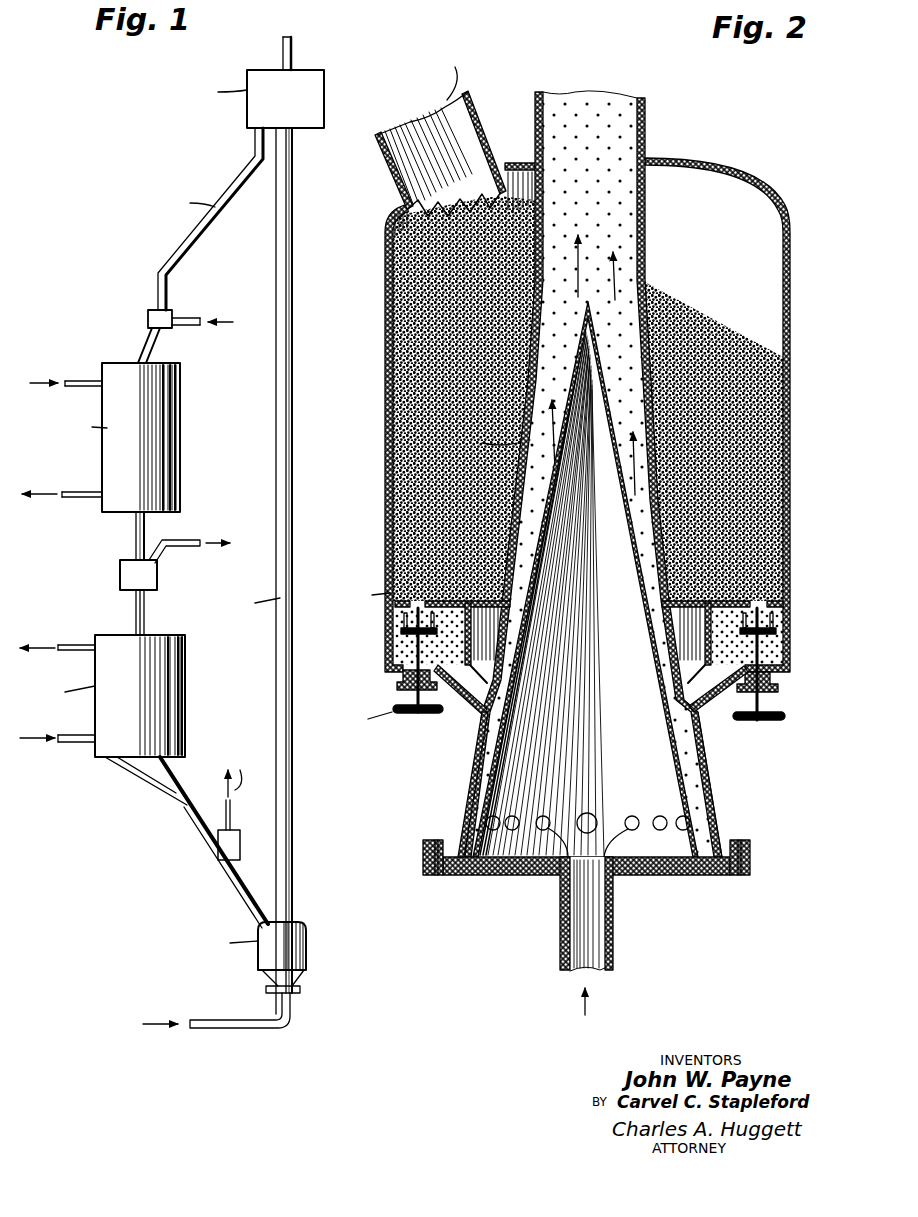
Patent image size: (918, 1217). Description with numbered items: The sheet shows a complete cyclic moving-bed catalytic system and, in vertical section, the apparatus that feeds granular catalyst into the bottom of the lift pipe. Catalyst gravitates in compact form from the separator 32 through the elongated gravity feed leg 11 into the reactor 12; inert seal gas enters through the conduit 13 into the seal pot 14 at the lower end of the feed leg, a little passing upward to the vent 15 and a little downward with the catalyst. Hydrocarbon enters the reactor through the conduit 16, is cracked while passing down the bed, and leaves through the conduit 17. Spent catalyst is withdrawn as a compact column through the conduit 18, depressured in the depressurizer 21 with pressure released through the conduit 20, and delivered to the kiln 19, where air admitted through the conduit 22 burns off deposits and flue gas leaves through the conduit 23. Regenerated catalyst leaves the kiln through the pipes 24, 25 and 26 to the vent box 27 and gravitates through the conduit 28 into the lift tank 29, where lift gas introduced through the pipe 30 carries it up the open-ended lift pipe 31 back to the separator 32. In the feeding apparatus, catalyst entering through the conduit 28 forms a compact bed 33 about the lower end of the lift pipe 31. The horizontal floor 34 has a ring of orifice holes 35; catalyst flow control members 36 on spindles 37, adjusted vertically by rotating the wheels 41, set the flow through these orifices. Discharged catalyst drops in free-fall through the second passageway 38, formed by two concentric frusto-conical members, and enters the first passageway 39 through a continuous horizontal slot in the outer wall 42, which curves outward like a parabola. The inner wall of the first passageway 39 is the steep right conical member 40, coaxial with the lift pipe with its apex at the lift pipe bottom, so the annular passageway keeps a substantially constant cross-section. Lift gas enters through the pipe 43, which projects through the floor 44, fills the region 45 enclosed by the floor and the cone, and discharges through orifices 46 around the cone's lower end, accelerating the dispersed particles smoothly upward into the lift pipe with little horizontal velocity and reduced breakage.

In FIG. 1, the gravity feed leg 11 is at (247, 172).
In FIG. 1, the reactor 12 is at (170, 398).
In FIG. 1, the seal gas conduit 13 is at (182, 320).
In FIG. 1, the seal pot 14 is at (148, 319).
In FIG. 1, the vent pipe 15 is at (283, 49).
In FIG. 1, the hydrocarbon inlet conduit 16 is at (85, 375).
In FIG. 1, the product outlet conduit 17 is at (72, 500).
In FIG. 1, the spent catalyst conduit 18 is at (136, 543).
In FIG. 1, the kiln 19 is at (172, 660).
In FIG. 1, the depressuring conduit 20 is at (180, 538).
In FIG. 1, the depressurizer 21 is at (138, 575).
In FIG. 1, the air conduit 22 is at (72, 745).
In FIG. 1, the flue gas conduit 23 is at (78, 645).
In FIG. 1, the catalyst withdrawal pipe 24 is at (176, 774).
In FIG. 1, the catalyst withdrawal pipe 25 is at (127, 770).
In FIG. 1, the catalyst withdrawal pipe 26 is at (200, 828).
In FIG. 1, the vent box 27 is at (218, 852).
In FIG. 1, the catalyst feed conduit 28 is at (240, 895).
In FIG. 2, the catalyst feed conduit 28 is at (392, 182).
In FIG. 1, the lift tank 29 is at (296, 953).
In FIG. 2, the lift tank 29 is at (790, 290).
In FIG. 1, the lift gas pipe 30 is at (240, 1029).
In FIG. 1, the lift pipe 31 is at (276, 437).
In FIG. 2, the lift pipe 31 is at (647, 121).
In FIG. 1, the separator 32 is at (228, 98).
In FIG. 2, the compact bed 33 is at (468, 359).
In FIG. 2, the horizontal floor 34 is at (755, 606).
In FIG. 2, the orifice holes 35 is at (770, 600).
In FIG. 2, the catalyst flow control members 36 is at (784, 636).
In FIG. 2, the spindles 37 is at (790, 673).
In FIG. 2, the second passageway 38 is at (478, 690).
In FIG. 2, the first passageway 39 is at (509, 548).
In FIG. 2, the right conical member 40 is at (660, 645).
In FIG. 2, the wheels 41 is at (767, 722).
In FIG. 2, the outer wall member 42 is at (722, 812).
In FIG. 2, the lift gas pipe 43 is at (614, 946).
In FIG. 2, the floor 44 is at (706, 874).
In FIG. 2, the gas region 45 is at (628, 749).
In FIG. 2, the gas orifices 46 is at (630, 816).